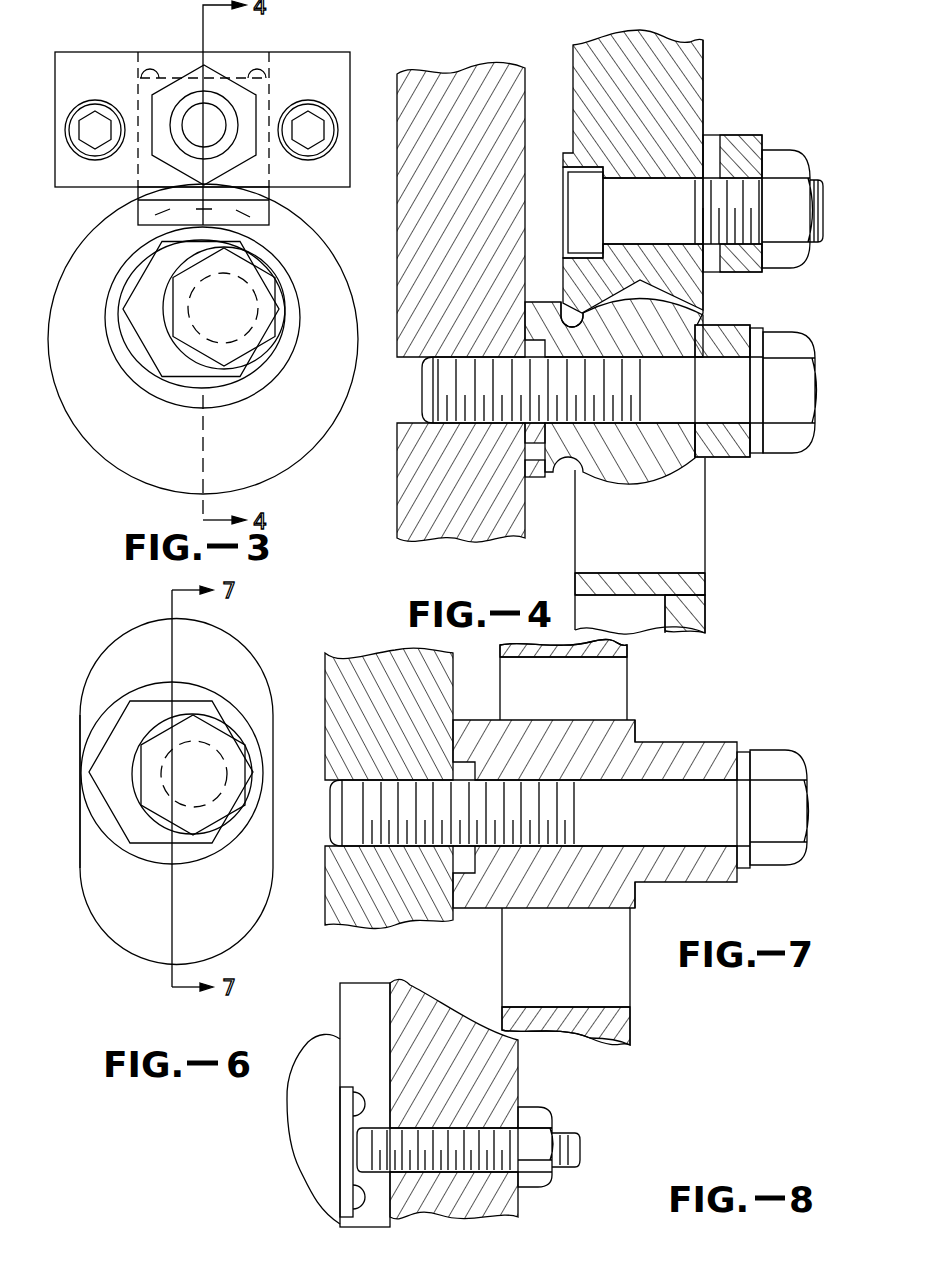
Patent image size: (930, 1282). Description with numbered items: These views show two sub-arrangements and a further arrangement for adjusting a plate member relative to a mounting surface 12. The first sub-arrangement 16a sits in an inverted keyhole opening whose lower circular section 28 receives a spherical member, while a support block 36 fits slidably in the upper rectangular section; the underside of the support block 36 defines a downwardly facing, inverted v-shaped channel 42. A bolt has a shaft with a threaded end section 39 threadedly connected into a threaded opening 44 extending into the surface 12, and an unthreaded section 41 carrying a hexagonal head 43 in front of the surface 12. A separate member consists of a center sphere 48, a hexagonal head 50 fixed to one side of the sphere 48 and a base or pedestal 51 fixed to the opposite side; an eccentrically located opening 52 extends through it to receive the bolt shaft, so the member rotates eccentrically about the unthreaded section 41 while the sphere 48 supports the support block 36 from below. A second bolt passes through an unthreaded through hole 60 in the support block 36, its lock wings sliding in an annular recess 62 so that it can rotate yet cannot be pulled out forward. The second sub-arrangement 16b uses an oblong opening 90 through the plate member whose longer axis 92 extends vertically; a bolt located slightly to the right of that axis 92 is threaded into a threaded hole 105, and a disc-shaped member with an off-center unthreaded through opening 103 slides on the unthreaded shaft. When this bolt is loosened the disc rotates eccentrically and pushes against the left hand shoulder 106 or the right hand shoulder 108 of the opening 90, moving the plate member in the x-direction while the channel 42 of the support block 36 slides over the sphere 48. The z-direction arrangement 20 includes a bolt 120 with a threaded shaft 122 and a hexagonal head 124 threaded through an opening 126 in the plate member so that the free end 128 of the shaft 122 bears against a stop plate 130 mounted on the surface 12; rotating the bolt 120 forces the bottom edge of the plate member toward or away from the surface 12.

In FIG. 4, the surface 12 is at (525, 68).
In FIG. 3, the sub-arrangement 16a is at (100, 483).
In FIG. 4, the sub-arrangement 16a is at (736, 546).
In FIG. 6, the sub-arrangement 16b is at (106, 962).
In FIG. 7, the sub-arrangement 16b is at (716, 684).
In FIG. 8, the arrangement 20 is at (617, 1106).
In FIG. 3, the lower circular section 28 is at (313, 449).
In FIG. 3, the support block 36 is at (263, 208).
In FIG. 4, the support block 36 is at (549, 236).
In FIG. 4, the threaded end section 39 is at (468, 428).
In FIG. 4, the unthreaded section 41 is at (727, 420).
In FIG. 4, the downwardly facing channel 42 is at (640, 288).
In FIG. 3, the hexagonal head 43 is at (263, 308).
In FIG. 4, the hexagonal head 43 is at (800, 440).
In FIG. 4, the threaded opening 44 is at (402, 418).
In FIG. 3, the sphere 48 is at (115, 335).
In FIG. 4, the sphere 48 is at (642, 487).
In FIG. 3, the hexagonal head 50 is at (183, 375).
In FIG. 4, the hexagonal head 50 is at (720, 325).
In FIG. 4, the base or pedestal 51 is at (557, 470).
In FIG. 4, the eccentrically located opening 52 is at (672, 414).
In FIG. 4, the unthreaded through hole 60 is at (655, 175).
In FIG. 4, the annular recess 62 is at (563, 160).
In FIG. 6, the opening 90 is at (250, 903).
In FIG. 6, the longer axis 92 is at (174, 905).
In FIG. 7, the unthreaded through opening 103 is at (692, 785).
In FIG. 7, the threaded hole 105 is at (326, 828).
In FIG. 6, the left hand shoulder 106 is at (84, 853).
In FIG. 6, the right hand shoulder 108 is at (270, 730).
In FIG. 8, the bolt 120 is at (531, 1092).
In FIG. 8, the threaded shaft 122 is at (522, 1205).
In FIG. 8, the hexagonal head 124 is at (547, 1183).
In FIG. 8, the threaded opening 126 is at (417, 1127).
In FIG. 8, the free end 128 is at (375, 1125).
In FIG. 8, the stop plate 130 is at (300, 1143).